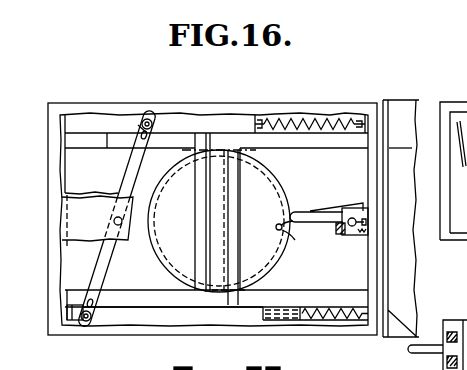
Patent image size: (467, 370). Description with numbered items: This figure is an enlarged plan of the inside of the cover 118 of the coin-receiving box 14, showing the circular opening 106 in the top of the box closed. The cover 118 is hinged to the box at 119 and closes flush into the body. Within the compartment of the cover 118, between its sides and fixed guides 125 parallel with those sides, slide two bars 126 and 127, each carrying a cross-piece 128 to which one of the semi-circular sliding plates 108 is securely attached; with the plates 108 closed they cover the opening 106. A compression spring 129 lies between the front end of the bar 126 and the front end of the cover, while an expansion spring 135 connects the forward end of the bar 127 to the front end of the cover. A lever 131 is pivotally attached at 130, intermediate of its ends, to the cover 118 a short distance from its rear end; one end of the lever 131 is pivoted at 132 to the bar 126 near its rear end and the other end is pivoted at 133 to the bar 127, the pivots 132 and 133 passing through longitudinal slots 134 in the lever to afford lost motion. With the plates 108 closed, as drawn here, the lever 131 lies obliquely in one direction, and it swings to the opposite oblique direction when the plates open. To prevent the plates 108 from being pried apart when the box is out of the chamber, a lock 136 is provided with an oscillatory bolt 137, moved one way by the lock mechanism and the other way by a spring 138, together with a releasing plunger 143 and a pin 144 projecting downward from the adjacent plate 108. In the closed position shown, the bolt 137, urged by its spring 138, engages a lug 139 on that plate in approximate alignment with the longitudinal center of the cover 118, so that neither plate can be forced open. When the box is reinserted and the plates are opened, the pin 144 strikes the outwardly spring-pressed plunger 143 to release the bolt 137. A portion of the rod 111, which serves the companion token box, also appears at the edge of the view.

The coin-receiving box 14 is at (388, 127).
The circular opening 106 is at (278, 175).
The semi-circular sliding plates 108 is at (219, 221).
The rod 111 is at (433, 350).
The cover 118 is at (257, 111).
The hinges 119 is at (400, 148).
The fixed guides 125 is at (176, 130).
The bar 126 is at (180, 315).
The bar 127 is at (213, 128).
The cross-piece 128 is at (238, 262).
The spring 129 is at (349, 320).
The pivot 130 is at (114, 222).
The lever 131 is at (128, 170).
The pivot 132 is at (87, 322).
The pivot 133 is at (150, 118).
The longitudinal slots 134 is at (143, 124).
The spring 135 is at (307, 120).
The lock 136 is at (357, 219).
The oscillatory bolt 137 is at (291, 214).
The spring 138 is at (326, 209).
The lug 139 is at (287, 229).
The releasing plunger 143 is at (340, 234).
The pin 144 is at (277, 225).